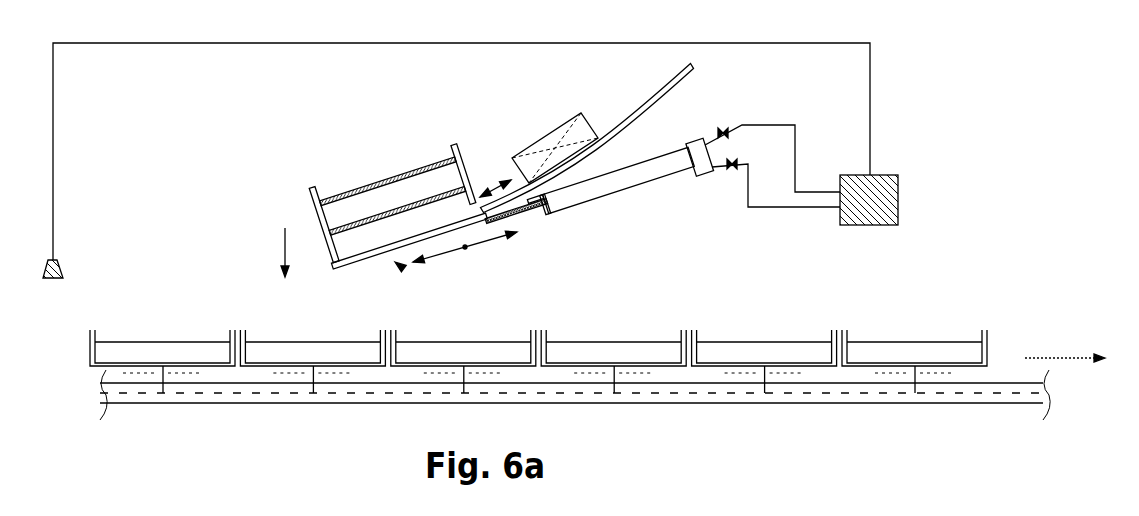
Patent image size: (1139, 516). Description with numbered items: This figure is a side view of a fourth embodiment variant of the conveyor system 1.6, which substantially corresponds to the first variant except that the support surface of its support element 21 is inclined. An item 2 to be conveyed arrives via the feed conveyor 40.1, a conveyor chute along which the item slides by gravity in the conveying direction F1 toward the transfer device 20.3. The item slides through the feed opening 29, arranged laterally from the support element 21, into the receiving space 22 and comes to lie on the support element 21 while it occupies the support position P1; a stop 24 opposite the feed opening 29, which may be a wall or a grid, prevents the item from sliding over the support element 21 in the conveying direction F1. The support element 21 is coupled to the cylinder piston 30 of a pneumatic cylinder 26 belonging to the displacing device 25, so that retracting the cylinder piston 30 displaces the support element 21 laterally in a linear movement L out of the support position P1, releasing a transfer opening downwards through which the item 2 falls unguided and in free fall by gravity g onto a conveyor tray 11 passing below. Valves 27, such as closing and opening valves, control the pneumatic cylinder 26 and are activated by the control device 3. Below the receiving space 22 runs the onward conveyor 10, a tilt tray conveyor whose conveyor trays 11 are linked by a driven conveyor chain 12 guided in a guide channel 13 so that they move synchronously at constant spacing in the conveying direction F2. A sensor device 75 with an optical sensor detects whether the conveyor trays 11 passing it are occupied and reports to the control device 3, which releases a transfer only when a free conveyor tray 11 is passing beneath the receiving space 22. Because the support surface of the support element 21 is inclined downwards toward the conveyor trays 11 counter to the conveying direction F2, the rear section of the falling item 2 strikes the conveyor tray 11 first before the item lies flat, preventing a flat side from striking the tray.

The conveyor system 1.6 is at (168, 181).
The item to be conveyed 2 is at (549, 129).
The control device 3 is at (880, 200).
The onward conveyor 10 is at (569, 364).
The conveyor tray 11 is at (285, 350).
The conveyor chain 12 is at (300, 395).
The guide channel 13 is at (238, 407).
The transfer device 20.3 is at (327, 189).
The support element 21 is at (371, 259).
The receiving space 22 is at (380, 183).
The stop 24 is at (318, 213).
The displacing device 25 is at (640, 158).
The pneumatic cylinder 26 is at (702, 172).
The valves 27 is at (735, 161).
The feed opening 29 is at (402, 214).
The cylinder piston 30 is at (520, 218).
The feed conveyor 40.1 is at (633, 99).
The sensor device 75 is at (63, 262).
The conveying direction F1 is at (497, 186).
The conveying direction of the onward conveyor F2 is at (1055, 358).
The linear movement L is at (465, 247).
The support position P1 is at (403, 268).
The gravity g is at (280, 244).